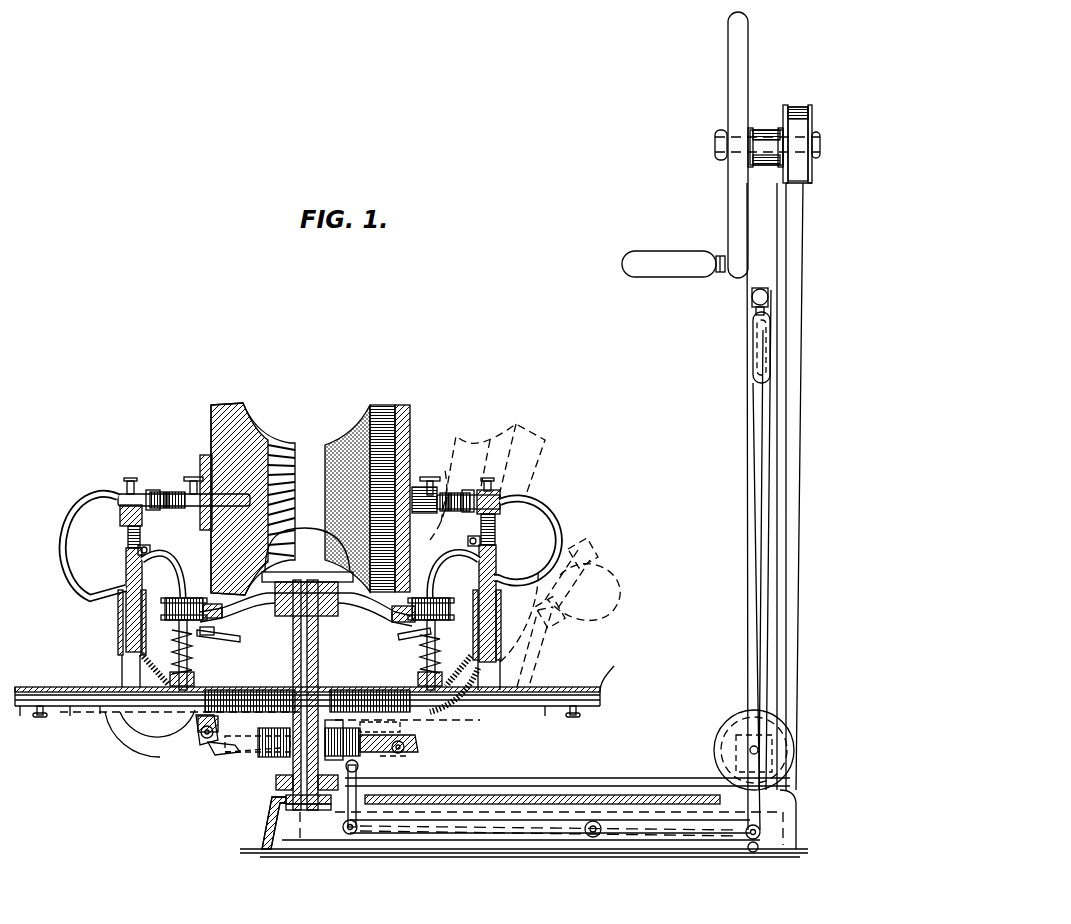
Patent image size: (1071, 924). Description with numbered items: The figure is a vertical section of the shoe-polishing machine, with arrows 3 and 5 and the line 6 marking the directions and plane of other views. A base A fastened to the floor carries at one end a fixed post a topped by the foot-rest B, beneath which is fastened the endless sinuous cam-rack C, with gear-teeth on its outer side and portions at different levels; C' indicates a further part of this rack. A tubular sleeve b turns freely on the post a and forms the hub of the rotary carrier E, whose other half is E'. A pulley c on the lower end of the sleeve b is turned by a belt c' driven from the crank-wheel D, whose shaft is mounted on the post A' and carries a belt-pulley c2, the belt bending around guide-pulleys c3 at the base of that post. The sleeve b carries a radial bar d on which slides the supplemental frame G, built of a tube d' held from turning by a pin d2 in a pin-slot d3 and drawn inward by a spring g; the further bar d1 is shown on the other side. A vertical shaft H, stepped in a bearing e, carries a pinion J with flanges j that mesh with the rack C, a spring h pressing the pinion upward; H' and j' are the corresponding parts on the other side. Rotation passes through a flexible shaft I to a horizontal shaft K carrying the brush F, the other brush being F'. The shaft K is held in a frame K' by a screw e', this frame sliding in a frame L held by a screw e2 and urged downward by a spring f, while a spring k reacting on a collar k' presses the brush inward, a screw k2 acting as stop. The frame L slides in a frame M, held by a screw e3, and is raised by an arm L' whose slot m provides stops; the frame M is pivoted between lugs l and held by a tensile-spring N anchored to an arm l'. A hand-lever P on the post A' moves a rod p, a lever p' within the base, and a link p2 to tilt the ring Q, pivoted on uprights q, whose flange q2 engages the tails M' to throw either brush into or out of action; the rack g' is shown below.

The base A is at (524, 823).
The post A' is at (761, 486).
The foot-rest B is at (307, 572).
The cam-rack C is at (233, 619).
The arm C' is at (379, 620).
The crank-wheel D is at (685, 145).
The rotary carrier E is at (252, 634).
The yoke arm E' is at (358, 631).
The brush F is at (381, 498).
The brush F' is at (247, 499).
The supplemental frame G is at (307, 684).
The rotative shaft H is at (194, 652).
The spring H' is at (419, 654).
The flexible shaft I is at (311, 546).
The pinion J is at (190, 598).
The horizontal shaft K is at (314, 485).
The frame K' is at (303, 511).
The frame L is at (305, 603).
The arm L' is at (314, 628).
The frame M is at (304, 640).
The tail M' is at (314, 757).
The tensile-spring N is at (192, 708).
The hand-lever P is at (752, 298).
The tilting ring Q is at (341, 740).
The post a is at (318, 655).
The tubular shaft b is at (293, 662).
The pulley c is at (295, 786).
The belt c' is at (567, 770).
The belt-pulley c2 is at (803, 147).
The guide-pulleys c3 is at (790, 750).
The radial bar d is at (307, 724).
The tube d' is at (610, 681).
The bar d1 is at (180, 719).
The pin d2 is at (310, 724).
The pin-slot d3 is at (21, 720).
The bearing e is at (306, 676).
The screw e' is at (316, 475).
The screw e2 is at (309, 542).
The screw e3 is at (495, 608).
The spring f is at (140, 530).
The spring g is at (307, 691).
The rack g' is at (257, 734).
The spring h is at (306, 663).
The flanges j is at (212, 601).
The bearing j' is at (403, 599).
The spring k is at (310, 483).
The collar k' is at (316, 485).
The screw k2 is at (309, 473).
The lugs l is at (298, 726).
The arm l' is at (302, 764).
The slot m is at (210, 638).
The rod p is at (737, 517).
The lever p' is at (546, 856).
The link p2 is at (356, 790).
The uprights q is at (407, 738).
The flange q2 is at (240, 754).
The arrow 3 is at (132, 817).
The arrow 5 is at (660, 197).
The section line 6 is at (660, 680).